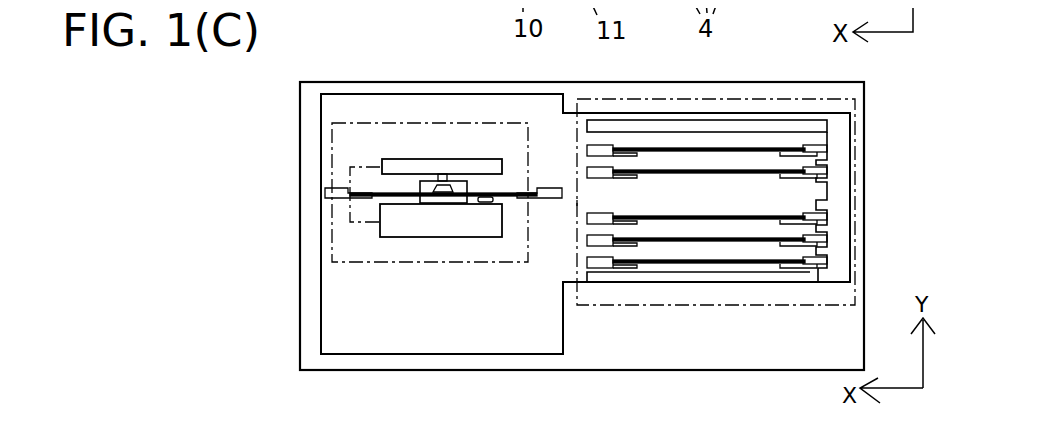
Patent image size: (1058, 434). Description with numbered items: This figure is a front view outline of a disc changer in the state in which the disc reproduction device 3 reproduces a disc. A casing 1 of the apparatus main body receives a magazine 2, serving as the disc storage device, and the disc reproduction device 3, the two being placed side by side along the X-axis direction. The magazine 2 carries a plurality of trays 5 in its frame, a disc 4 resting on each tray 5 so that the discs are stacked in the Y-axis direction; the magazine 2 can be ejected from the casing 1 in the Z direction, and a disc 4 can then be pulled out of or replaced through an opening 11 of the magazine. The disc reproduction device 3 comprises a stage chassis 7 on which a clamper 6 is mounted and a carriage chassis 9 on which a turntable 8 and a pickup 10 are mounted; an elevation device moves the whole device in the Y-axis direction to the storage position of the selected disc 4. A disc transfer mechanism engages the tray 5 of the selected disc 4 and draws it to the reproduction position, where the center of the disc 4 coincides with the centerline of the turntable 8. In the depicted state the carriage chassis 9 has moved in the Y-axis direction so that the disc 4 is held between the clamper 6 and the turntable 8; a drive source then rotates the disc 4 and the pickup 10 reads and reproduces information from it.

The casing 1 is at (475, 82).
The magazine 2 is at (760, 98).
The disc reproduction device 3 is at (392, 123).
The disc 4 is at (372, 192).
The tray 5 is at (325, 192).
The clamper 6 is at (418, 185).
The stage chassis 7 is at (387, 157).
The turntable 8 is at (428, 204).
The carriage chassis 9 is at (430, 230).
The pickup 10 is at (490, 199).
The opening 11 is at (577, 203).